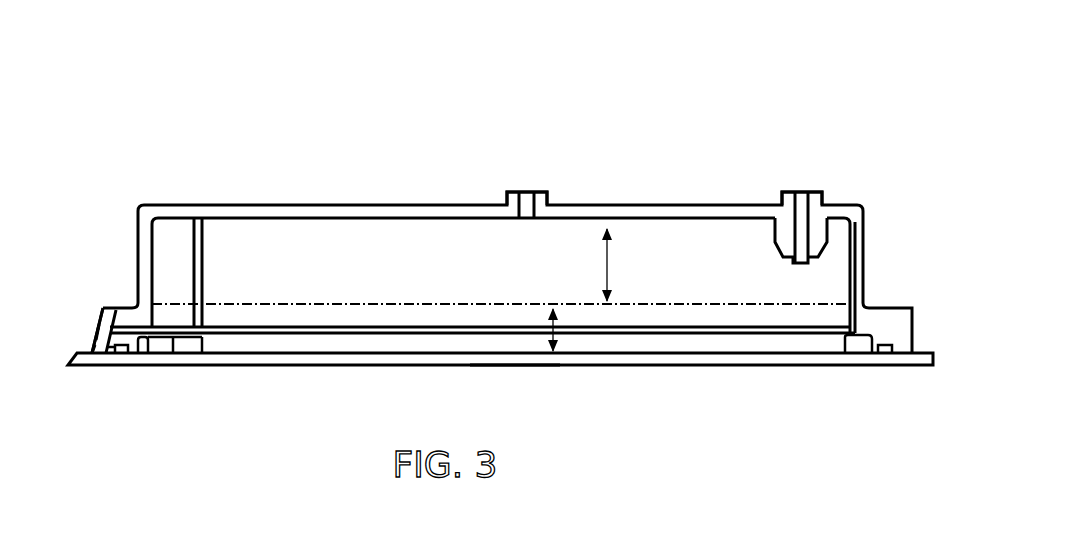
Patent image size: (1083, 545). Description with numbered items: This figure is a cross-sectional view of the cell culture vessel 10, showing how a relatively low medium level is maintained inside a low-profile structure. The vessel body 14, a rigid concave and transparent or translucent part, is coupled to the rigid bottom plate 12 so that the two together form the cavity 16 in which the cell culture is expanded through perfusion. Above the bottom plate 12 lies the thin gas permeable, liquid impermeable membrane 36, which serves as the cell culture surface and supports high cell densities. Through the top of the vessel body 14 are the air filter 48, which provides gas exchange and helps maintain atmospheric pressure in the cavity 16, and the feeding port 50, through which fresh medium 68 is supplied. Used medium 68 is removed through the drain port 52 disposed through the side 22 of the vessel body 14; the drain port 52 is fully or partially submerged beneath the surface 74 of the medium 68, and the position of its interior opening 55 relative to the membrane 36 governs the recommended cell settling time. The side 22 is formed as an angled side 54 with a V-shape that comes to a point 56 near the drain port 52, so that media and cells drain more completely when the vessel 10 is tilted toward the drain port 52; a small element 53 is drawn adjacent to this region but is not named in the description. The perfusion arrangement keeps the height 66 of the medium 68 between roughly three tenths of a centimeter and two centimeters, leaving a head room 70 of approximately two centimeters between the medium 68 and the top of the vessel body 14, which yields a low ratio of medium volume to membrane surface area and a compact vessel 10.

The cell culture vessel 10 is at (797, 74).
The bottom plate 12 is at (340, 367).
The vessel body 14 is at (662, 205).
The cavity 16 is at (531, 279).
The side 22 is at (96, 302).
The membrane 36 is at (513, 356).
The air filter 48 is at (522, 192).
The feeding port 50 is at (798, 192).
The drain port 52 is at (97, 323).
The seal 53 is at (114, 330).
The angled side 54 is at (91, 337).
The interior opening 55 is at (132, 327).
The point 56 is at (91, 344).
The height 66 is at (556, 325).
The cell media 68 is at (477, 304).
The head room 70 is at (609, 265).
The surface 74 is at (325, 291).